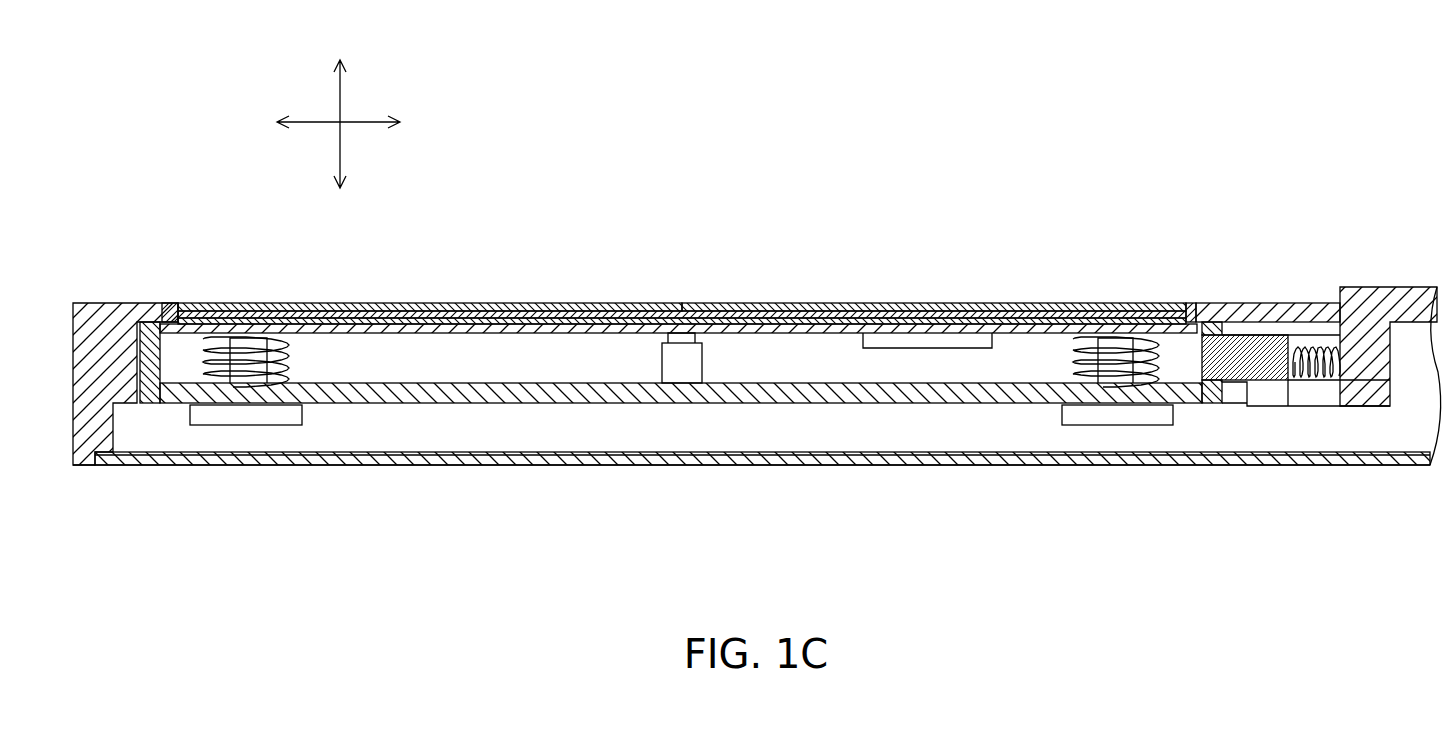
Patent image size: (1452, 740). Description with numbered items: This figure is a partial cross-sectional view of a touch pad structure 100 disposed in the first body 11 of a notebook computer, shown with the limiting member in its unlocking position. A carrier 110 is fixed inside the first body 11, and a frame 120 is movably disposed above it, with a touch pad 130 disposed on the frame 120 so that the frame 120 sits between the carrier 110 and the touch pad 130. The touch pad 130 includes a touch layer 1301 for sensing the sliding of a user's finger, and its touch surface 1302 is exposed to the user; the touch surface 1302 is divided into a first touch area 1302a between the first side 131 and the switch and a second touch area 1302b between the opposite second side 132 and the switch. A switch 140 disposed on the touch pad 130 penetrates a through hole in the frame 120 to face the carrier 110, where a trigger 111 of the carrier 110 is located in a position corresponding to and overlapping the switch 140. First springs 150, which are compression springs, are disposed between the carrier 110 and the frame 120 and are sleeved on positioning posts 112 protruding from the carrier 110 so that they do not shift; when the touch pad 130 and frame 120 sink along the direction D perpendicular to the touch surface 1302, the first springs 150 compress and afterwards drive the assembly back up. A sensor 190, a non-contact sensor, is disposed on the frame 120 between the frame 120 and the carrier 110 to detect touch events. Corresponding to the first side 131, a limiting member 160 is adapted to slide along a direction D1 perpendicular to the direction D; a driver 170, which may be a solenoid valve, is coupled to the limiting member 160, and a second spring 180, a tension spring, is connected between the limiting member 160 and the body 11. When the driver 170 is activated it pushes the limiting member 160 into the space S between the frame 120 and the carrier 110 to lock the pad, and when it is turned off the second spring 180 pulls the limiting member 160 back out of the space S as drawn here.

The first body 11 is at (110, 303).
The touch pad structure 100 is at (400, 433).
The carrier 110 is at (512, 395).
The trigger 111 is at (680, 363).
The positioning posts 112 is at (243, 350).
The frame 120 is at (780, 326).
The touch pad 130 is at (682, 273).
The touch layer 1301 is at (580, 320).
The touch surface 1302 is at (682, 267).
The first touch area 1302a is at (1065, 295).
The second touch area 1302b is at (455, 295).
The first side 131 is at (1196, 309).
The second side 132 is at (168, 309).
The switch 140 is at (687, 341).
The first springs 150 is at (282, 355).
The limiting member 160 is at (1218, 362).
The driver 170 is at (1315, 395).
The second spring 180 is at (1310, 358).
The sensor 190 is at (920, 340).
The space S is at (1167, 351).
The direction D is at (340, 110).
The direction D1 is at (357, 123).